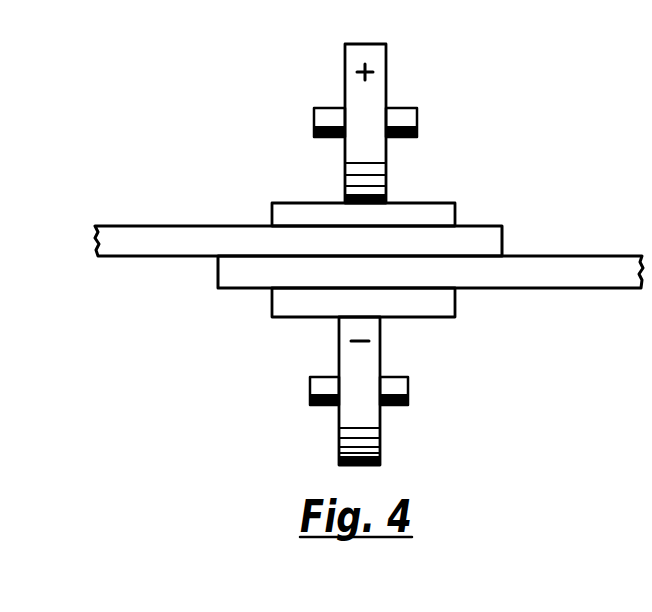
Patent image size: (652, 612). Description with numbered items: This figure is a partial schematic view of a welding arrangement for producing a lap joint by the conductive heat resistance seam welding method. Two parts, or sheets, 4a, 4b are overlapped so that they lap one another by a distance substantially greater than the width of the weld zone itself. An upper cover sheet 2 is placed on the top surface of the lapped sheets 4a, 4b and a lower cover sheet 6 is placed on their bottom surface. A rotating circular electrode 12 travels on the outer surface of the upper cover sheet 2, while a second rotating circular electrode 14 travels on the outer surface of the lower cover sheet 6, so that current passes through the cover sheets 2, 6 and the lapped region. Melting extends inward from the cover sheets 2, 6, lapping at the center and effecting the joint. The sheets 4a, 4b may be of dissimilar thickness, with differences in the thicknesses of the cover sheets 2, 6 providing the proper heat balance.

The rotating circular electrode 12 is at (380, 55).
The upper cover sheet 2 is at (442, 215).
The part (sheet) 4a is at (490, 242).
The part (sheet) 4b is at (243, 269).
The lower cover sheet 6 is at (438, 303).
The rotating circular electrode 14 is at (348, 417).